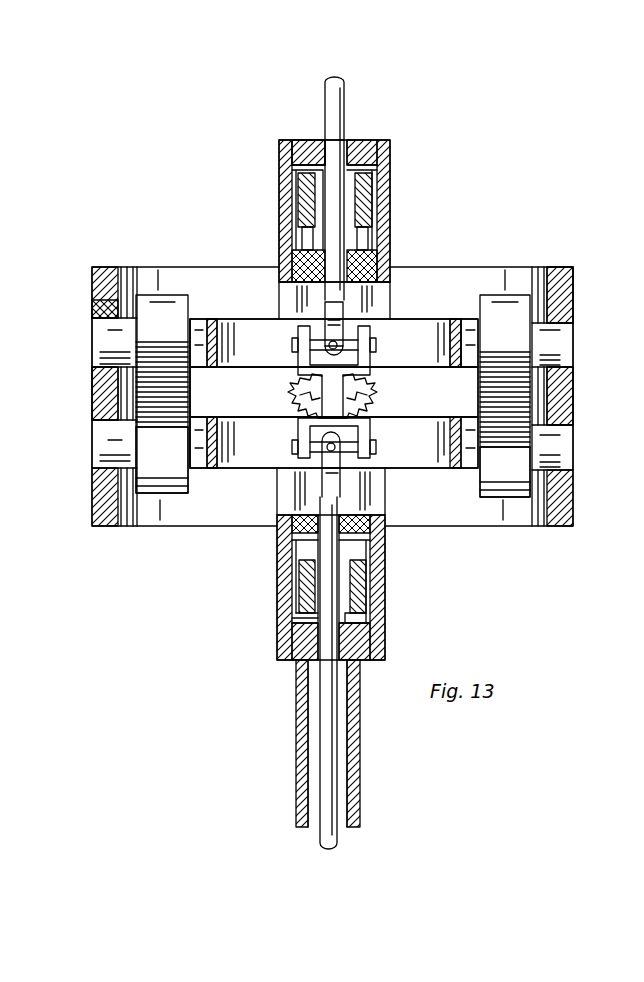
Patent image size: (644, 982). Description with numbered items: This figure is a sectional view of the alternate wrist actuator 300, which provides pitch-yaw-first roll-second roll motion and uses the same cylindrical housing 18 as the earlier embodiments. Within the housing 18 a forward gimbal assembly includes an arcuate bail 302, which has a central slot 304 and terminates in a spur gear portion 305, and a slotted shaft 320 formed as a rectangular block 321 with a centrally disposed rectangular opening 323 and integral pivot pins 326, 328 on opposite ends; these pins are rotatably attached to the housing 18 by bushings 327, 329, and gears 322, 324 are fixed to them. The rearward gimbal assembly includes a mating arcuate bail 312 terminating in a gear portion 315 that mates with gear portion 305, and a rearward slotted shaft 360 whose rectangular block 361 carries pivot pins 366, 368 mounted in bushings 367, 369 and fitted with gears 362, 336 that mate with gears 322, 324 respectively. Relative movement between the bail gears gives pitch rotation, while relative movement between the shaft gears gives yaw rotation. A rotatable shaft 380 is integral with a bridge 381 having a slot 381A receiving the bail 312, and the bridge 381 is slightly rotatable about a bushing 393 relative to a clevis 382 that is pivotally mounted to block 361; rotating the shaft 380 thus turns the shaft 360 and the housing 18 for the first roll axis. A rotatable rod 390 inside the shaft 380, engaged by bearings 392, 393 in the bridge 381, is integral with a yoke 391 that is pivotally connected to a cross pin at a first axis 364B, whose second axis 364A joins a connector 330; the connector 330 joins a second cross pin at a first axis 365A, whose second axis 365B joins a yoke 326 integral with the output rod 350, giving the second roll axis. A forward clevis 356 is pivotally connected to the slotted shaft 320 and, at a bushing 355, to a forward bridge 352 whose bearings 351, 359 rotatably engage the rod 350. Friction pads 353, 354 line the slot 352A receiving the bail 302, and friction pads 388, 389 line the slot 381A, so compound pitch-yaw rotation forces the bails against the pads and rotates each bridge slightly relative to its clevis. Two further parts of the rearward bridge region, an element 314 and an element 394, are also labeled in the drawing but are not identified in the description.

The wrist actuator 300 is at (498, 180).
The cylindrical housing 18 is at (107, 258).
The arcuate bail 302 is at (300, 222).
The slot 304 is at (388, 145).
The gear portion 305 is at (322, 382).
The arcuate bail 312 is at (297, 563).
The retainer 314 is at (366, 618).
The gear portion 315 is at (340, 408).
The slotted shaft 320 is at (222, 381).
The rectangular block 321 is at (236, 312).
The gear 322 is at (517, 365).
The rectangular opening 323 is at (428, 323).
The gear 324 is at (176, 360).
The pivot pin 326 is at (560, 342).
The bushing 327 is at (565, 292).
The pivot pin 328 is at (104, 346).
The bushing 329 is at (100, 306).
The connector 330 is at (357, 382).
The gear 336 is at (160, 436).
The output rod 350 is at (346, 83).
The bearing 351 is at (348, 140).
The forward bridge 352 is at (300, 140).
The slot 352A is at (307, 170).
The friction pad 353 is at (377, 187).
The friction pad 354 is at (293, 188).
The bushing 355 is at (364, 262).
The forward clevis 356 is at (292, 297).
The bearing 359 is at (307, 258).
The slotted shaft 360 is at (460, 398).
The rectangular block 361 is at (232, 478).
The gear 362 is at (500, 445).
The second axis 364A is at (297, 444).
The first axis 364B is at (335, 447).
The first axis 365A is at (297, 348).
The second axis 365B is at (337, 344).
The pivot pin 366 is at (565, 458).
The bushing 367 is at (572, 415).
The pivot pin 368 is at (110, 449).
The bushing 369 is at (100, 412).
The rotatable shaft 380 is at (302, 760).
The bridge 381 is at (290, 645).
The slot 381A is at (305, 620).
The clevis 382 is at (295, 494).
The friction pad 388 is at (296, 584).
The friction pad 389 is at (370, 591).
The rotatable rod 390 is at (328, 836).
The yoke 391 is at (335, 479).
The bearing 392 is at (302, 668).
The bushing 393 is at (300, 530).
The right seal 394 is at (350, 535).